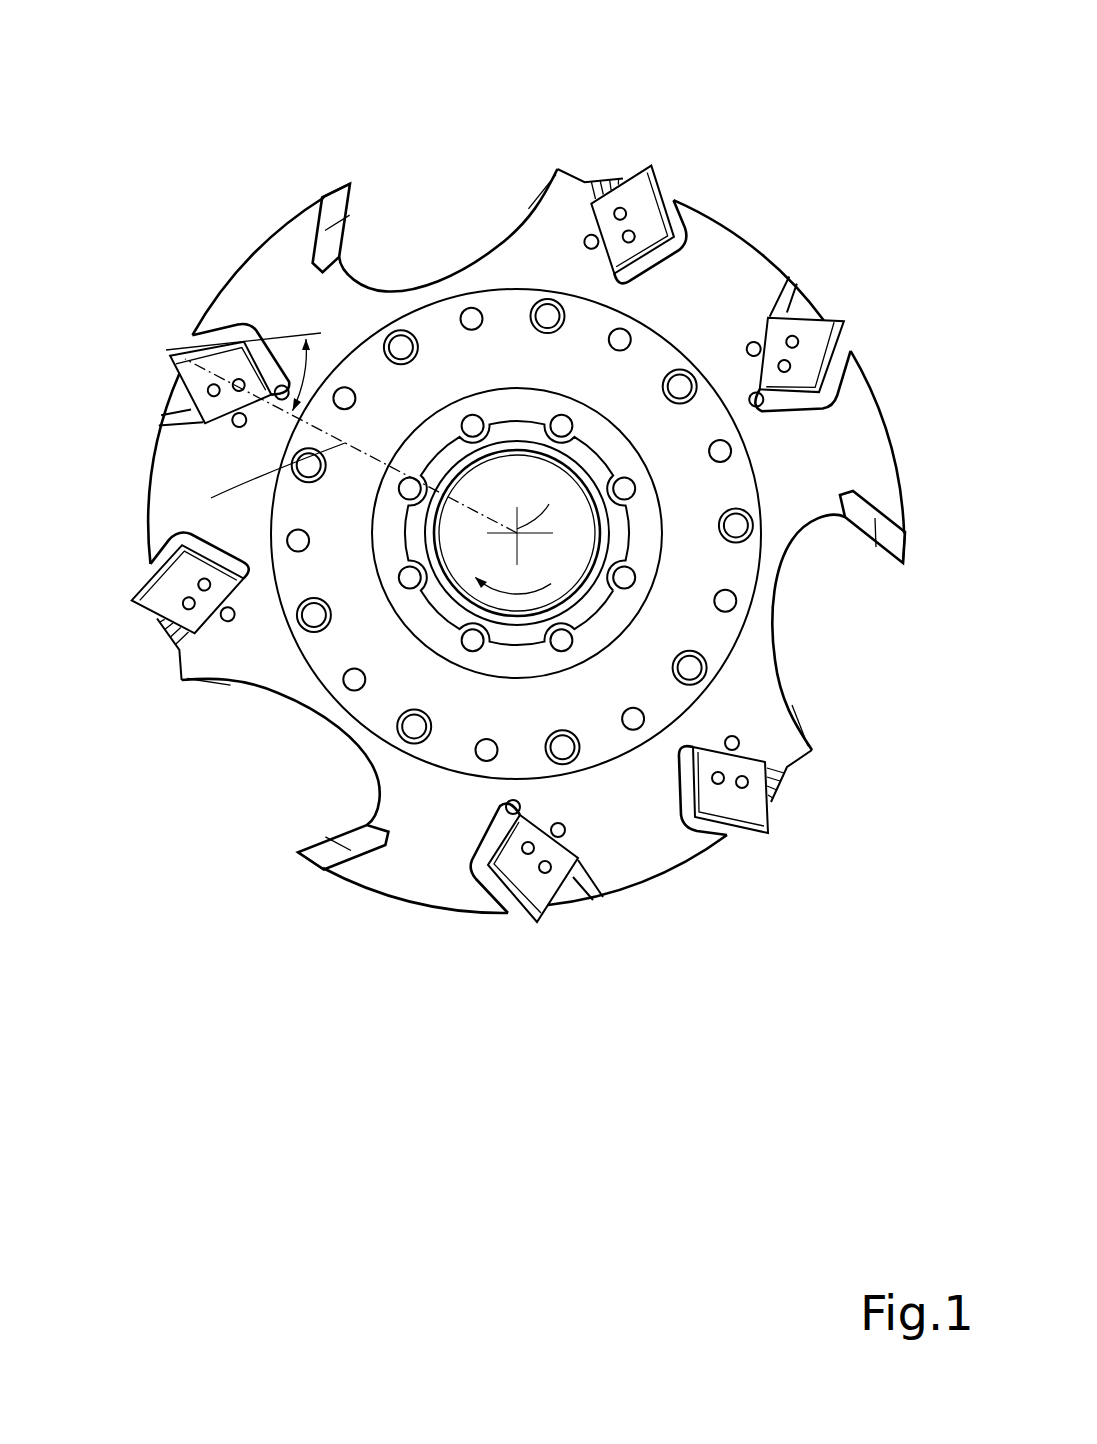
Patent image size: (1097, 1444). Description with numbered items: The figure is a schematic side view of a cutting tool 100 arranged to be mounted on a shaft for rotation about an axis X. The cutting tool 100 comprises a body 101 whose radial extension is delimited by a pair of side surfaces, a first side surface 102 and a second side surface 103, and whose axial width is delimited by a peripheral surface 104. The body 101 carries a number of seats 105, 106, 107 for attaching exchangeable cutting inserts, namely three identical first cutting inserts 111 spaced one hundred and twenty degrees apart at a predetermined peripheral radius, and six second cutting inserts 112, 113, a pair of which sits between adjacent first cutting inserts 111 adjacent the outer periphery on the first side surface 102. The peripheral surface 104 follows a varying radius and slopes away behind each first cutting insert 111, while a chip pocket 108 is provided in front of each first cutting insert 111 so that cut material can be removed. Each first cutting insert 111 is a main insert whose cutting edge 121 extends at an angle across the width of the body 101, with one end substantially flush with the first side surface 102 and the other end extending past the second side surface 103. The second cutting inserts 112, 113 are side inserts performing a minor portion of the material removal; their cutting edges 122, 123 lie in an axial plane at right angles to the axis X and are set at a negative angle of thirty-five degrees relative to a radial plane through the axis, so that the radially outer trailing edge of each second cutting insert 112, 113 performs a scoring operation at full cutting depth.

The cutting tool 100 is at (503, 527).
The body 101 is at (737, 286).
The first side surface 102 is at (382, 880).
The second side surface 103 is at (432, 880).
The peripheral surface 104 is at (248, 252).
The seat 105 is at (327, 228).
The seat 106 is at (183, 415).
The seat 107 is at (586, 197).
The chip pocket 108 is at (442, 214).
The first cutting insert 111 is at (340, 190).
The second cutting insert 112 is at (192, 374).
The second cutting insert 113 is at (636, 186).
The cutting edge 121 is at (335, 210).
The cutting edge 122 is at (187, 339).
The cutting edge 123 is at (658, 187).